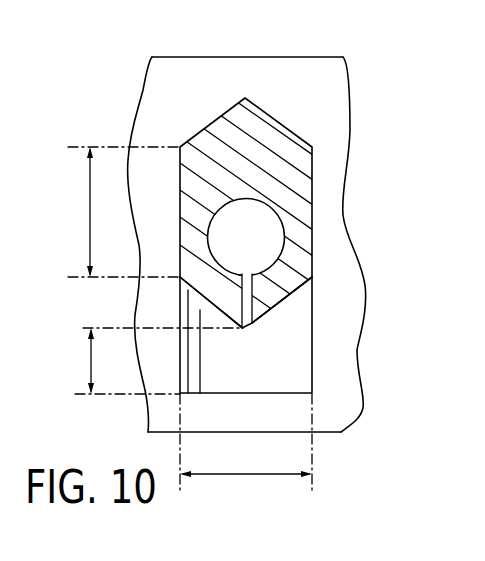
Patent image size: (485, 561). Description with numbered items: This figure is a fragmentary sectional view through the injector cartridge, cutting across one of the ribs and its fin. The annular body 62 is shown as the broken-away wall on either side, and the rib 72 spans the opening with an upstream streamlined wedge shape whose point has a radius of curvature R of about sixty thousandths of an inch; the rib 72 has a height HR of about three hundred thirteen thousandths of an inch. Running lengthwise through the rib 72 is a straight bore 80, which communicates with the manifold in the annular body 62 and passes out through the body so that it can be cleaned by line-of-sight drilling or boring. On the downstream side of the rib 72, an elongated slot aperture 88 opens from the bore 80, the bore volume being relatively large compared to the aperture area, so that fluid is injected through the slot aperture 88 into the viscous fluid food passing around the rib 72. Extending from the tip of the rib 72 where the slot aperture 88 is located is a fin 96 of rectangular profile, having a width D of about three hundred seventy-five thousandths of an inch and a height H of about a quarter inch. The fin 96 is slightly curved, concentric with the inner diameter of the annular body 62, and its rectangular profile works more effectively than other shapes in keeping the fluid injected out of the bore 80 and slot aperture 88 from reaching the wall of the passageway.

The annular body 62 is at (346, 78).
The rib 72 is at (313, 210).
The bore 80 is at (258, 247).
The slot aperture 88 is at (252, 328).
The fin 96 is at (312, 372).
The radius of curvature R is at (245, 97).
The rib height HR is at (88, 212).
The fin height H is at (90, 364).
The fin width D is at (245, 476).